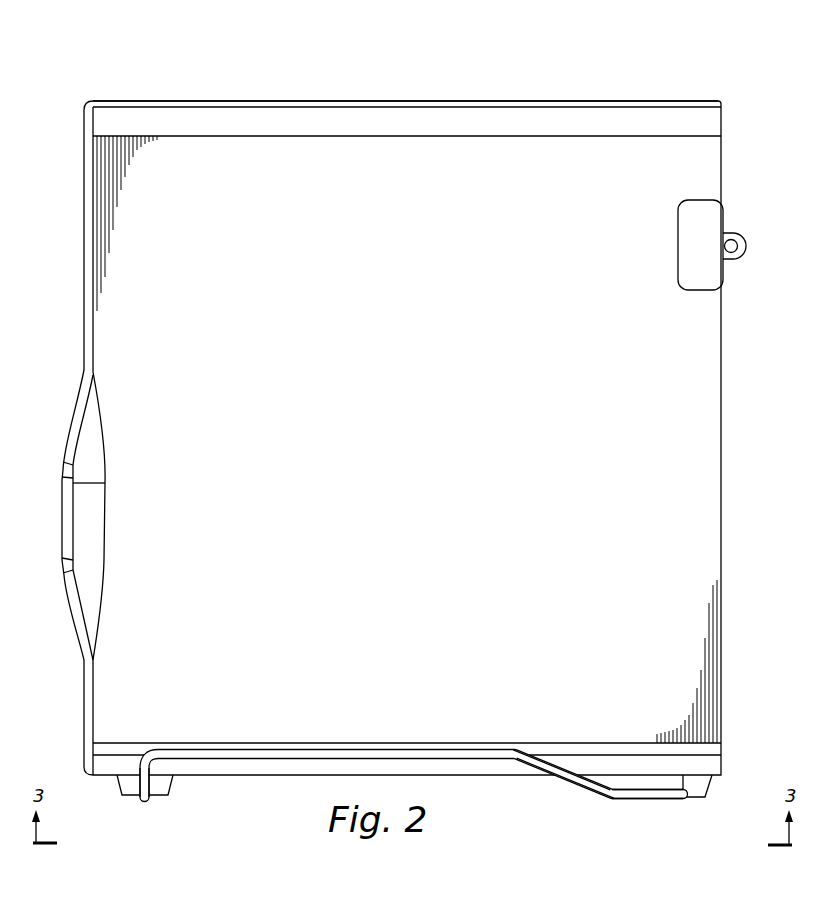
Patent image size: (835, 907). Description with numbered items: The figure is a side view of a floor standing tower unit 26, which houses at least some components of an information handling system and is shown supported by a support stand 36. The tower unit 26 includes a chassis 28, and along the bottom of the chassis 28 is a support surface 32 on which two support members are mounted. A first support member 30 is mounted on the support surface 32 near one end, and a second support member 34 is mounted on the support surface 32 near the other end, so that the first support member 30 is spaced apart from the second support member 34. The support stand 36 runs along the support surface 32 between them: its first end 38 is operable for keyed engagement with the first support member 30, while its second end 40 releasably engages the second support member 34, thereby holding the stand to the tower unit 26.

The tower unit 26 is at (147, 75).
The chassis 28 is at (553, 101).
The first support member 30 is at (713, 783).
The support surface 32 is at (501, 778).
The second support member 34 is at (116, 784).
The support stand 36 is at (610, 799).
The first end 38 is at (688, 800).
The second end 40 is at (141, 808).